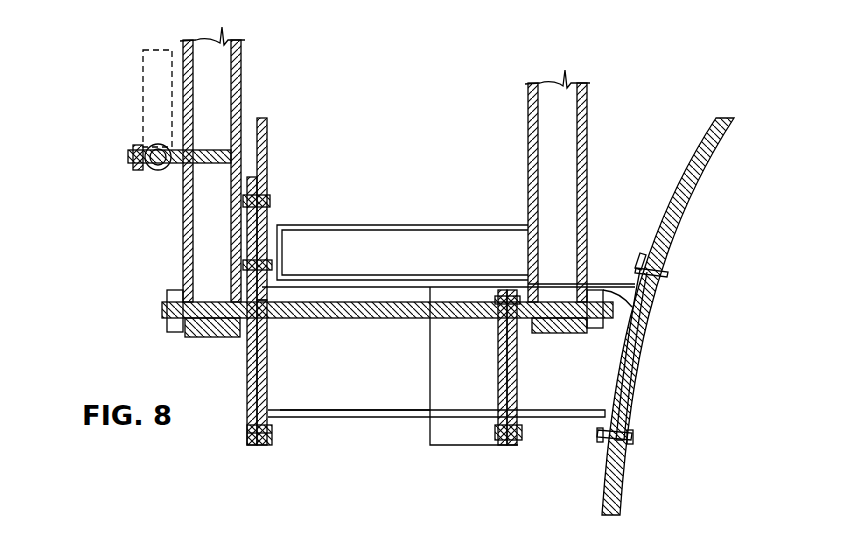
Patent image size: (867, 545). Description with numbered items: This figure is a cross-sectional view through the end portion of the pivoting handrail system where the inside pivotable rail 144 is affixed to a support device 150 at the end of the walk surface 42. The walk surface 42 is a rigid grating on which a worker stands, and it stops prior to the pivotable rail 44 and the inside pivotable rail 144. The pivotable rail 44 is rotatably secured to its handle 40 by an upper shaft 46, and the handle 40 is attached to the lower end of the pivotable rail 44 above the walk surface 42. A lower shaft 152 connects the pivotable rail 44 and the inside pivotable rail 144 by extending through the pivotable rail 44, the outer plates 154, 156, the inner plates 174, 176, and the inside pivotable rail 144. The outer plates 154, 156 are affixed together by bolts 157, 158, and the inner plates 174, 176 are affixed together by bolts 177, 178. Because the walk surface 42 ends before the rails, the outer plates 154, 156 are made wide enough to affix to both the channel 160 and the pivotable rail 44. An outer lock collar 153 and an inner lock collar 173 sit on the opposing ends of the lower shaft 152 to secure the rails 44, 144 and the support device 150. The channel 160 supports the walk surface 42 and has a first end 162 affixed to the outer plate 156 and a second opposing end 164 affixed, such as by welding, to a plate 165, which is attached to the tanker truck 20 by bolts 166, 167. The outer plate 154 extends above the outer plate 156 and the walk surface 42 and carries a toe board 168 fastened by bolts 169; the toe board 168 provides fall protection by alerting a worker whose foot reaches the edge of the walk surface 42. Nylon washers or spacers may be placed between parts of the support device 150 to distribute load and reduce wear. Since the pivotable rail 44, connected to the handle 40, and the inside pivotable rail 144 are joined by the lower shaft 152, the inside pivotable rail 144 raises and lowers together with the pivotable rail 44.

The tanker truck 20 is at (706, 162).
The handle 40 is at (143, 82).
The walk surface 42 is at (403, 264).
The pivotable rail 44 is at (241, 95).
The upper shaft 46 is at (172, 165).
The inside pivotable rail 144 is at (587, 118).
The support device 150 is at (312, 470).
The lower shaft 152 is at (162, 312).
The outer lock collar 153 is at (170, 290).
The outer plate 154 is at (248, 370).
The outer plate 156 is at (268, 348).
The bolt 157 is at (248, 435).
The bolt 158 is at (272, 265).
The channel 160 is at (355, 412).
The first end 162 is at (268, 412).
The second opposing end 164 is at (496, 415).
The plate 165 is at (612, 385).
The bolt 166 is at (598, 436).
The bolt 167 is at (641, 265).
The toe board 168 is at (267, 140).
The bolt 169 is at (270, 200).
The inner lock collar 173 is at (650, 322).
The inner plate 174 is at (498, 372).
The inner plate 176 is at (518, 355).
The bolt 177 is at (495, 432).
The bolt 178 is at (497, 300).